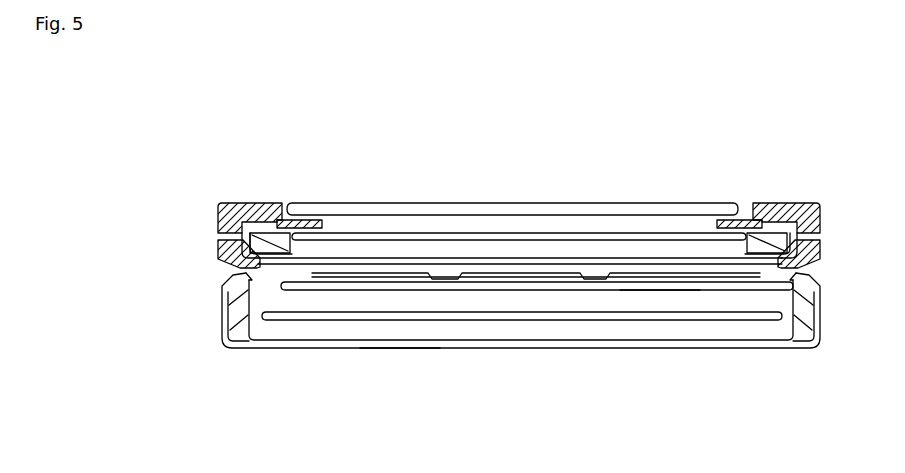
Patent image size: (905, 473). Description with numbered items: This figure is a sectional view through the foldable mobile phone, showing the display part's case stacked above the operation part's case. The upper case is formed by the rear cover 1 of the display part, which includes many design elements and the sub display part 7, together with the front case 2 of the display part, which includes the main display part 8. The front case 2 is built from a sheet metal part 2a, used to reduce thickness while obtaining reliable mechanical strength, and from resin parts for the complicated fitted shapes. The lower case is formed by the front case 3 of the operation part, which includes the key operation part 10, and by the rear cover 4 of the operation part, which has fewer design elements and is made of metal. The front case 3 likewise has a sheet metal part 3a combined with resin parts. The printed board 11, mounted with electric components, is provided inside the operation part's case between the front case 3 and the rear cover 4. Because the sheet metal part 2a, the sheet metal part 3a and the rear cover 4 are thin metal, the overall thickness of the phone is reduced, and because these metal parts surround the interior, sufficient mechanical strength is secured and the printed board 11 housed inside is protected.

The rear cover of the display part 1 is at (781, 200).
The front case of the display part 2 is at (215, 233).
The sheet metal part 2a is at (412, 232).
The front case of the operation part 3 is at (225, 285).
The sheet metal part 3a is at (632, 291).
The rear cover of the operation part 4 is at (398, 348).
The sub display part 7 is at (540, 205).
The main display part 8 is at (612, 258).
The key operation part 10 is at (316, 284).
The printed board 11 is at (519, 320).